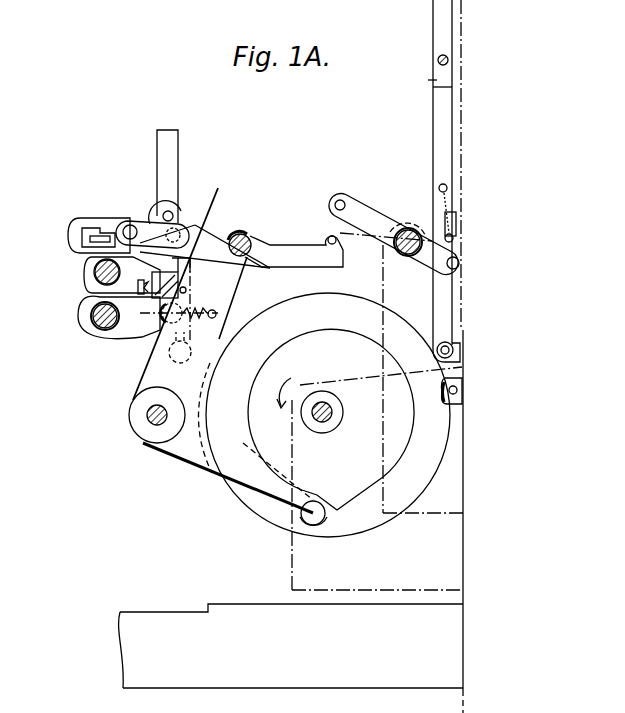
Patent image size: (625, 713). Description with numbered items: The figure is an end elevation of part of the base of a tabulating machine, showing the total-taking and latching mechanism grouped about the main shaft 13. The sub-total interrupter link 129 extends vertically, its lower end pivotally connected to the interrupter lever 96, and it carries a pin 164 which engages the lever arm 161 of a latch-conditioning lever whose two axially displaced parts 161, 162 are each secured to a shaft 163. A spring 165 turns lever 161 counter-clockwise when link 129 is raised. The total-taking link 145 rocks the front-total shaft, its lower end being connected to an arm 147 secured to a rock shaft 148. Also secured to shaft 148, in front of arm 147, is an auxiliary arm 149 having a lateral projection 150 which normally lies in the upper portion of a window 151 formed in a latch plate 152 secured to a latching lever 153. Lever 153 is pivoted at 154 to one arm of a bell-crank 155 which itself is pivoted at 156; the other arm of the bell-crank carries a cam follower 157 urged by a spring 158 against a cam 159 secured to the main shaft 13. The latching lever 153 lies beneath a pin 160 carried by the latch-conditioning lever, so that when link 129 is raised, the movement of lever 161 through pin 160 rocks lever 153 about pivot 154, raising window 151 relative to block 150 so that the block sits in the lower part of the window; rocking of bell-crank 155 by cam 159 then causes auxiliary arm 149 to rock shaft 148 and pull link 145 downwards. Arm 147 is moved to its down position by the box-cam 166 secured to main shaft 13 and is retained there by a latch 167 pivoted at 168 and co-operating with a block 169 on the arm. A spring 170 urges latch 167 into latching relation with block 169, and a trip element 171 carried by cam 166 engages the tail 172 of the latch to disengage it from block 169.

The main shaft 13 is at (320, 407).
The interrupter lever 96 is at (458, 354).
The sub-total interrupter link 129 is at (432, 13).
The total-taking link 145 is at (170, 160).
The arm 147 is at (172, 212).
The rock shaft 148 is at (95, 271).
The auxiliary arm 149 is at (82, 255).
The lateral projection 150 is at (100, 228).
The window 151 is at (80, 228).
The latch plate 152 is at (72, 231).
The latching lever 153 is at (140, 220).
The pivot 154 is at (226, 280).
The bell-crank 155 is at (255, 237).
The pivot 156 is at (147, 409).
The cam follower 157 is at (313, 513).
The spring 158 is at (93, 325).
The cam 159 is at (267, 478).
The pin 160 is at (348, 201).
The latch-conditioning lever arm 161 is at (452, 212).
The latch-conditioning lever part 162 is at (372, 207).
The shaft 163 is at (415, 228).
The pin 164 is at (453, 240).
The spring 165 is at (448, 222).
The box-cam 166 is at (372, 518).
The latch 167 is at (190, 297).
The pivot 168 is at (160, 322).
The block 169 is at (210, 212).
The spring 170 is at (135, 292).
The trip element 171 is at (462, 400).
The tail 172 is at (170, 365).